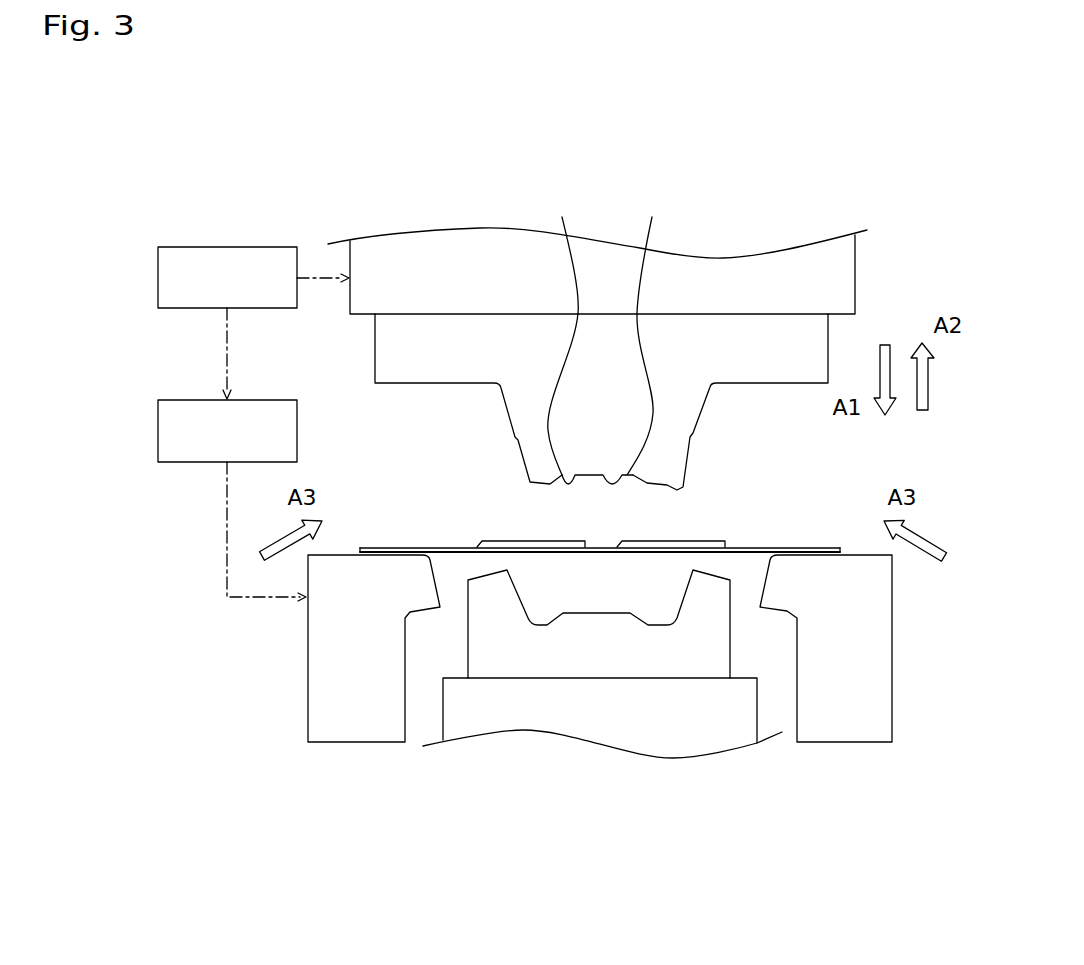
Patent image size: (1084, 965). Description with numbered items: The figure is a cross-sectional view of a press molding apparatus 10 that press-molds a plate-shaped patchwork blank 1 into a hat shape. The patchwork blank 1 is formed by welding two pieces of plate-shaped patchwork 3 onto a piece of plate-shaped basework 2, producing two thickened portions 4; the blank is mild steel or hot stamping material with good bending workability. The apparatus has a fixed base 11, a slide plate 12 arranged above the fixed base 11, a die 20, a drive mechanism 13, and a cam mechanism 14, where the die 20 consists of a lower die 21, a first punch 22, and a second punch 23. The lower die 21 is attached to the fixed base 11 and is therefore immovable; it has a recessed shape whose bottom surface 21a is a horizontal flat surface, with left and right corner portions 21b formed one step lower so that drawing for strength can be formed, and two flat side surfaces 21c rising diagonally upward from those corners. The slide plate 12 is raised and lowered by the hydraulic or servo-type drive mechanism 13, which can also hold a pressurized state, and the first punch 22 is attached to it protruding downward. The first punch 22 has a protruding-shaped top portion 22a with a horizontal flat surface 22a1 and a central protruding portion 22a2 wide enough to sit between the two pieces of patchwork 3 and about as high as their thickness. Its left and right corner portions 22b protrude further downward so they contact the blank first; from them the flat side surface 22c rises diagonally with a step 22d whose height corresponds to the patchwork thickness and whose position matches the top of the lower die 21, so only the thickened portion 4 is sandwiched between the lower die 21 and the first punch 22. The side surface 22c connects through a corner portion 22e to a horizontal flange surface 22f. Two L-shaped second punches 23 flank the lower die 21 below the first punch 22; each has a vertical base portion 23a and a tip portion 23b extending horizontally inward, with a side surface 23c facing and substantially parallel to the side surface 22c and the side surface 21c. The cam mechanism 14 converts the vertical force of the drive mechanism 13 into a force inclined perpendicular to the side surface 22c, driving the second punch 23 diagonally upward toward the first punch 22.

The patchwork blank 1 is at (787, 537).
The basework 2 is at (752, 547).
The patchwork 3 is at (500, 541).
The thickened portions 4 is at (673, 541).
The press molding apparatus 10 is at (327, 200).
The fixed base 11 is at (492, 725).
The slide plate 12 is at (466, 232).
The drive mechanism 13 is at (225, 245).
The cam mechanism 14 is at (200, 462).
The die 20 is at (282, 702).
The lower die 21 is at (688, 662).
The bottom surface 21a is at (603, 608).
The corner portions 21b is at (530, 620).
The side surfaces 21c is at (515, 588).
The first punch 22 is at (380, 352).
The top portion 22a is at (605, 303).
The flat surface 22a1 is at (559, 330).
The protruding portion 22a2 is at (649, 330).
The corner portions 22b is at (533, 483).
The side surface 22c is at (516, 458).
The step 22d is at (512, 442).
The corner portion 22e is at (495, 386).
The flange surface 22f is at (423, 384).
The second punch 23 is at (370, 743).
The base portion 23a is at (340, 730).
The tip portion 23b is at (417, 590).
The side surface 23c is at (436, 582).